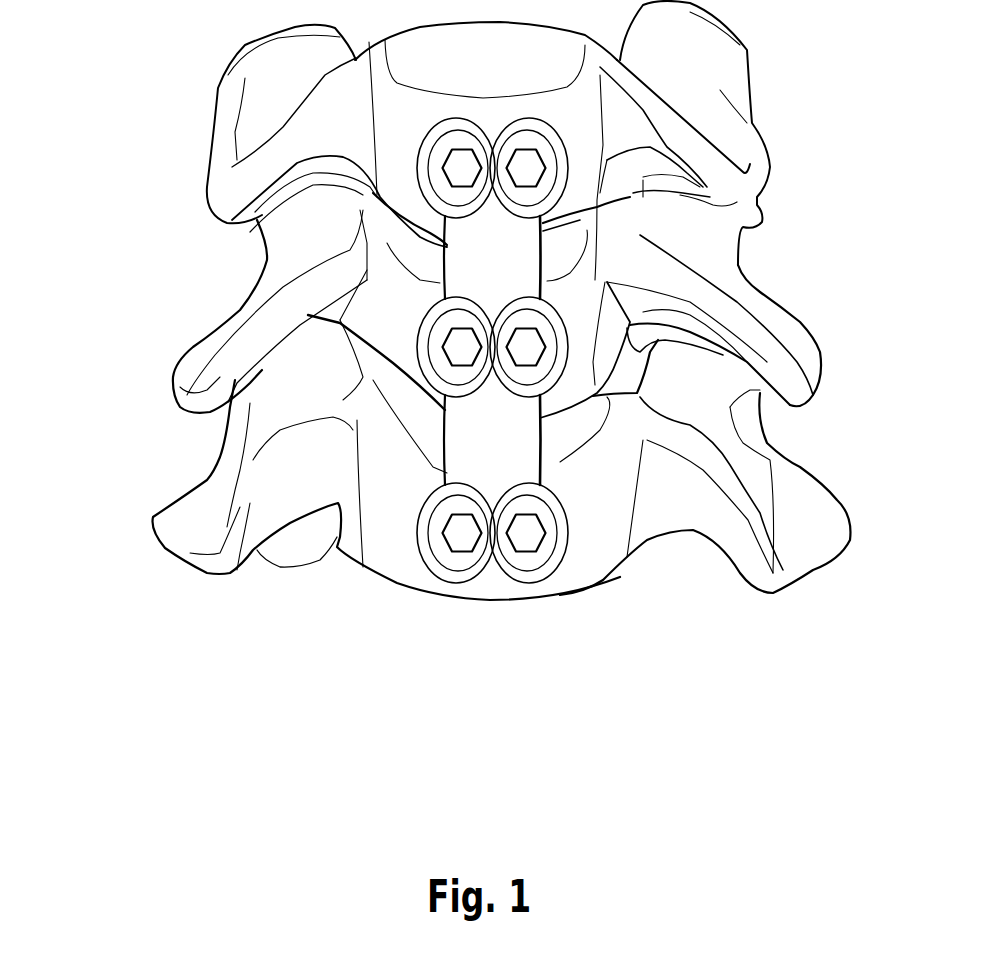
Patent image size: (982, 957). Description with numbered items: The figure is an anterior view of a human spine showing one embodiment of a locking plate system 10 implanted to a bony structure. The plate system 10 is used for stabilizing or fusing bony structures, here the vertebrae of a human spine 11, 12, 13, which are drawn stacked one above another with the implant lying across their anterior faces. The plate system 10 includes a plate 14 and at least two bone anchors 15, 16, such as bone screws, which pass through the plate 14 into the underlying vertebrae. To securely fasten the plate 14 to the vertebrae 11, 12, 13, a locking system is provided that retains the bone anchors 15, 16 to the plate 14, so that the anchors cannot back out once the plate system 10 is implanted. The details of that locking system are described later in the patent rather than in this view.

The plate system 10 is at (415, 480).
The vertebra 11 is at (397, 161).
The vertebra 12 is at (407, 340).
The vertebra 13 is at (370, 447).
The plate 14 is at (520, 441).
The bone anchor 15 is at (457, 567).
The bone anchor 16 is at (547, 555).